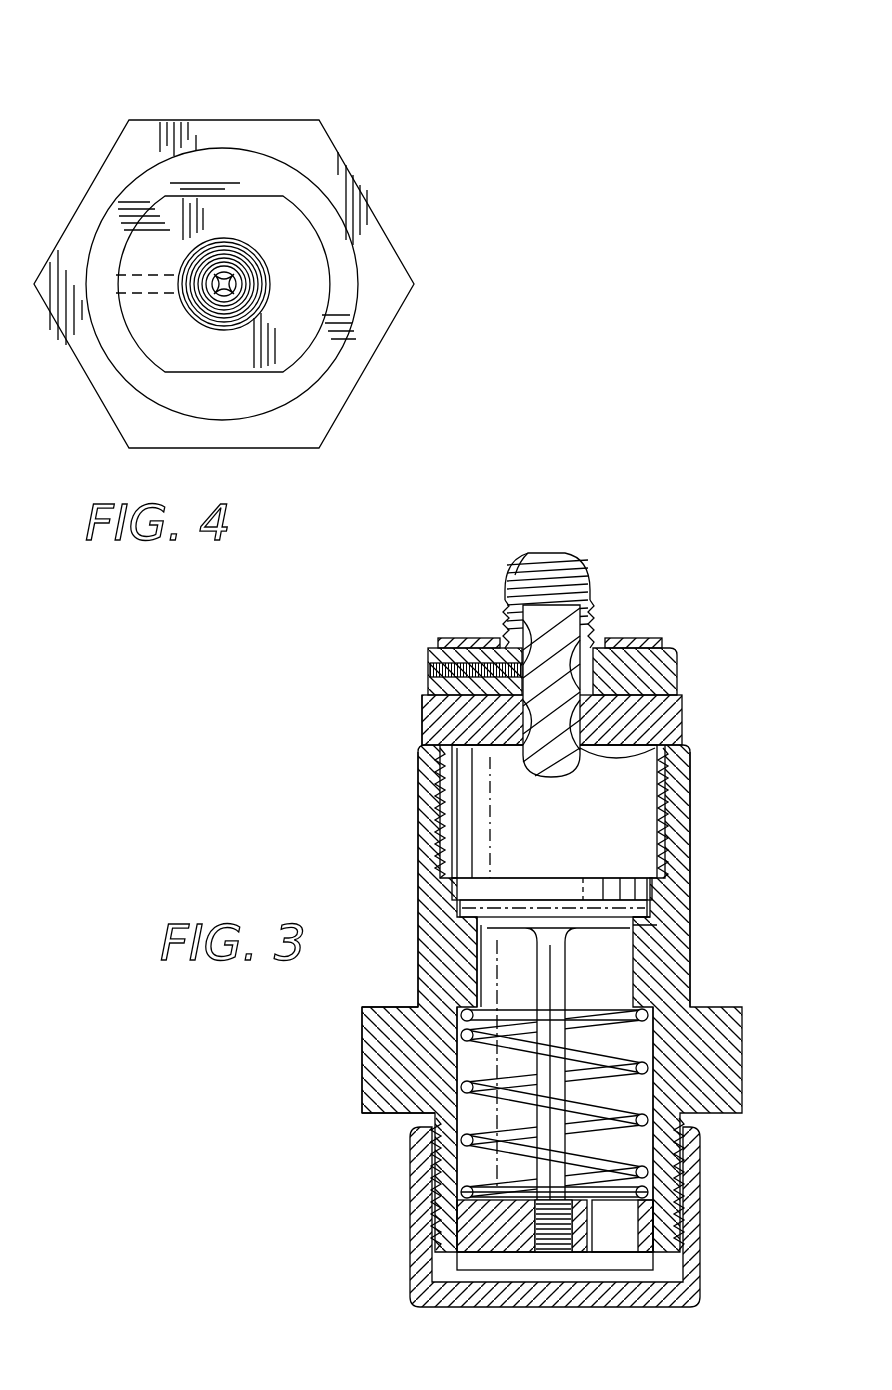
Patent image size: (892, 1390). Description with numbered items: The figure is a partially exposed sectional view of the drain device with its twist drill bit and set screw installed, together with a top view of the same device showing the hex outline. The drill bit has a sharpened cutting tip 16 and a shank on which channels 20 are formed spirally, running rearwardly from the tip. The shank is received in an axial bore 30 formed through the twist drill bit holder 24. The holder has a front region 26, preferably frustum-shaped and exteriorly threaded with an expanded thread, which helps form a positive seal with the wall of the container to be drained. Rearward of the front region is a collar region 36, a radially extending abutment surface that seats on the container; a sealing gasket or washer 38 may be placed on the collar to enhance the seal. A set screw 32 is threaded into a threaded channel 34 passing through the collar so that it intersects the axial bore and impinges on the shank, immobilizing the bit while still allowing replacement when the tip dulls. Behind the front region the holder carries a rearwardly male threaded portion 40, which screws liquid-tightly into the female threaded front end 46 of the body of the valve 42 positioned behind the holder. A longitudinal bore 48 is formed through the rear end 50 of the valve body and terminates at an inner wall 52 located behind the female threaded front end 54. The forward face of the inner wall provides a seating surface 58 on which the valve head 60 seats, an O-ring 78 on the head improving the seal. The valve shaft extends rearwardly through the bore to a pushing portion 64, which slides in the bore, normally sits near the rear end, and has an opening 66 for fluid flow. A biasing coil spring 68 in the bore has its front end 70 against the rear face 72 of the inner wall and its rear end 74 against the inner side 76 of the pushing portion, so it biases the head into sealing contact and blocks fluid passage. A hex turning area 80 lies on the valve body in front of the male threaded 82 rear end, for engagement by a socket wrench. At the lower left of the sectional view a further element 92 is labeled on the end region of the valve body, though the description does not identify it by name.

In FIG. 4, the sharpened cutting tip 16 is at (244, 288).
In FIG. 3, the sharpened cutting tip 16 is at (563, 553).
In FIG. 4, the channels 20 is at (232, 282).
In FIG. 3, the channels 20 is at (558, 550).
In FIG. 3, the twist drill bit holder 24 is at (368, 741).
In FIG. 4, the front region 26 is at (254, 300).
In FIG. 3, the axial bore 30 is at (678, 718).
In FIG. 4, the set screw 32 is at (148, 283).
In FIG. 3, the set screw 32 is at (430, 670).
In FIG. 3, the threaded channel 34 is at (455, 680).
In FIG. 3, the collar region 36 is at (443, 720).
In FIG. 4, the sealing gasket or washer 38 is at (283, 217).
In FIG. 3, the sealing gasket or washer 38 is at (653, 640).
In FIG. 3, the rearwardly male threaded portion 40 is at (670, 756).
In FIG. 3, the valve 42 is at (728, 841).
In FIG. 3, the female threaded front end 46 is at (678, 818).
In FIG. 3, the longitudinal bore 48 is at (655, 1075).
In FIG. 3, the rear end 50 is at (437, 1140).
In FIG. 3, the inner wall 52 is at (680, 945).
In FIG. 3, the female threaded front end 54 is at (500, 807).
In FIG. 3, the seating surface 58 is at (470, 907).
In FIG. 3, the valve head 60 is at (653, 925).
In FIG. 3, the pushing portion 64 is at (477, 1228).
In FIG. 3, the opening 66 is at (618, 1223).
In FIG. 3, the biasing coil spring 68 is at (631, 1090).
In FIG. 3, the front end 70 is at (620, 1008).
In FIG. 3, the rear face 72 is at (440, 990).
In FIG. 3, the rear end 74 is at (640, 1185).
In FIG. 3, the inner side 76 is at (487, 1192).
In FIG. 3, the O-ring 78 is at (470, 922).
In FIG. 4, the hex turning area 80 is at (247, 120).
In FIG. 3, the hex turning area 80 is at (365, 1050).
In FIG. 3, the male threaded 82 is at (690, 1265).
In FIG. 3, the bottom plate 92 is at (448, 1262).